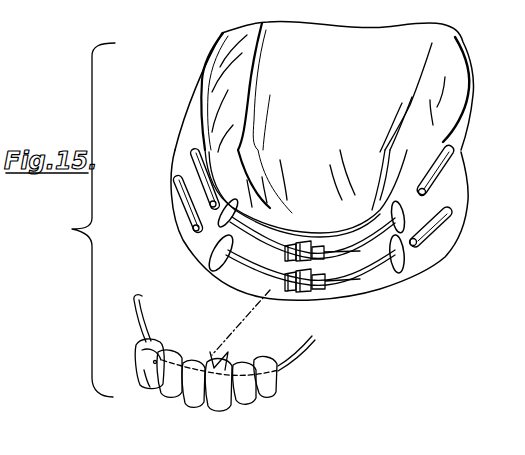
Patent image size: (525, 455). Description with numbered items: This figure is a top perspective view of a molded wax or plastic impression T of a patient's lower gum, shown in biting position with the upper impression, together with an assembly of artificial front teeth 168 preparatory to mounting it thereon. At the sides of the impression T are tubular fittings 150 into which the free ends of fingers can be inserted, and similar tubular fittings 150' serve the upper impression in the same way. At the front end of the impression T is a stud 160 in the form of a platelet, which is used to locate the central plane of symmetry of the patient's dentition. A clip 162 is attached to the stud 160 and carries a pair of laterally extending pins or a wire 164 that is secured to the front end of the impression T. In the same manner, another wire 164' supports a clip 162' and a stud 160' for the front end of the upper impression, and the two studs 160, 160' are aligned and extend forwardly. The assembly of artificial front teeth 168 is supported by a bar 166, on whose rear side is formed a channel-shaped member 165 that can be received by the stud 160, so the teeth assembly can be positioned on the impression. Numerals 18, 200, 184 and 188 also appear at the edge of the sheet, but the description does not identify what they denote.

The tubular fitting 150 is at (439, 250).
The tubular fitting 150' is at (431, 166).
The stud 160 is at (297, 302).
The stud 160' is at (308, 215).
The clip 162 is at (327, 306).
The clip 162' is at (329, 222).
The wire 164 is at (311, 297).
The wire 164' is at (312, 204).
The channel-shaped member 165 is at (214, 350).
The bar 166 is at (294, 367).
The artificial front teeth 168 is at (192, 403).
The impression T is at (478, 116).
The cut-off numeral 18 is at (516, 196).
The cut-off numeral 200 is at (512, 249).
The cut-off numeral 184 is at (504, 317).
The cut-off numeral 188 is at (510, 377).